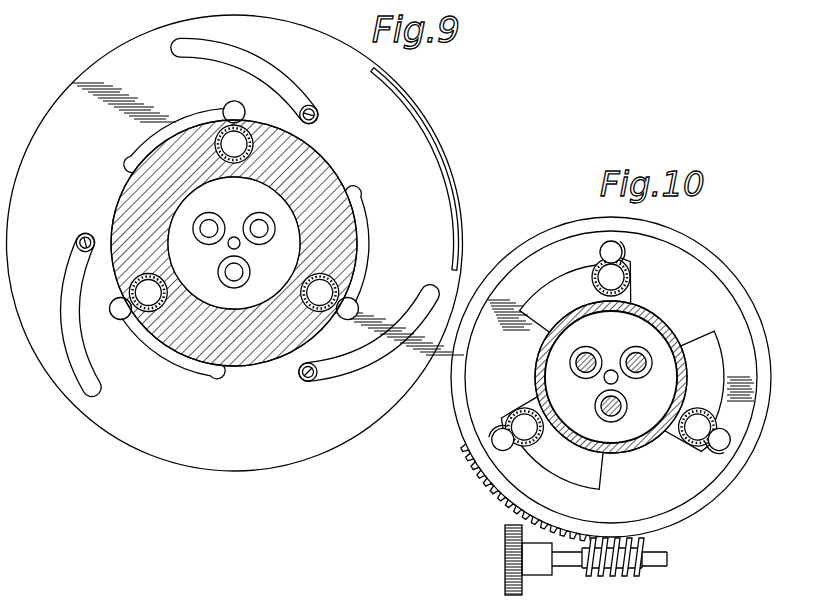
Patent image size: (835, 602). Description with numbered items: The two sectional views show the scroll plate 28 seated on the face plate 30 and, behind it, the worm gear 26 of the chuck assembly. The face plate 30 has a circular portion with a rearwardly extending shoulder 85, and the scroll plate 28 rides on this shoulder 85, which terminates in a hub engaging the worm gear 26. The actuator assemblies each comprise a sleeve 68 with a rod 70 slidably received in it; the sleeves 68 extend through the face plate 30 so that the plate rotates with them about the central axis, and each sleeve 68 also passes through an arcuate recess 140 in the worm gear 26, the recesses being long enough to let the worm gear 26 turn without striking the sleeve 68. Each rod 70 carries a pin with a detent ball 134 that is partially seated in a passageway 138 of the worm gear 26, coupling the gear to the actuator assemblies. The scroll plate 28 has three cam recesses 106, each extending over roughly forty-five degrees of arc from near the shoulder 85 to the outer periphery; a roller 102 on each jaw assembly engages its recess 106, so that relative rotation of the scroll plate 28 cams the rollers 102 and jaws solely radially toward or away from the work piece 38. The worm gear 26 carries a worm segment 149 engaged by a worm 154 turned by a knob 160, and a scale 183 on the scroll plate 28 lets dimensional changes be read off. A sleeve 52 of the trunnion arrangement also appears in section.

In FIG. 10, the worm gear 26 is at (706, 264).
In FIG. 9, the scroll plate 28 is at (345, 71).
In FIG. 9, the face plate 30 is at (244, 243).
In FIG. 9, the work piece 38 is at (233, 232).
In FIG. 9, the sleeve 52 is at (251, 248).
In FIG. 10, the sleeve 52 is at (592, 352).
In FIG. 9, the sleeve 68 is at (242, 120).
In FIG. 10, the sleeve 68 is at (631, 277).
In FIG. 10, the rod 70 is at (632, 289).
In FIG. 9, the shoulder 85 is at (312, 161).
In FIG. 9, the pin or roller 102 is at (316, 112).
In FIG. 9, the cam recess 106 is at (260, 62).
In FIG. 9, the detent ball 134 is at (231, 104).
In FIG. 10, the detent ball 134 is at (624, 245).
In FIG. 10, the passageway 138 is at (604, 247).
In FIG. 10, the arcuate recess 140 is at (548, 276).
In FIG. 10, the worm segment 149 is at (503, 506).
In FIG. 10, the worm 154 is at (634, 574).
In FIG. 10, the knob 160 is at (507, 566).
In FIG. 9, the scale 183 is at (422, 131).